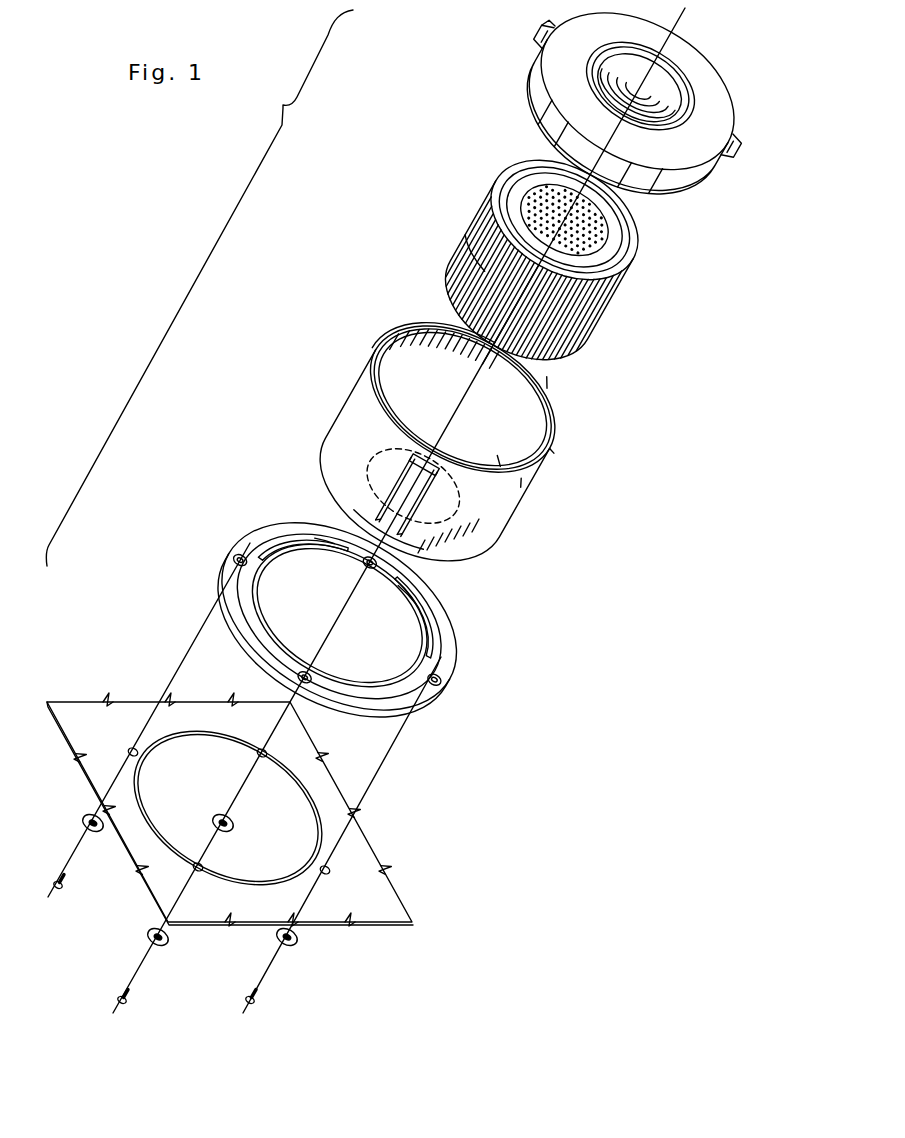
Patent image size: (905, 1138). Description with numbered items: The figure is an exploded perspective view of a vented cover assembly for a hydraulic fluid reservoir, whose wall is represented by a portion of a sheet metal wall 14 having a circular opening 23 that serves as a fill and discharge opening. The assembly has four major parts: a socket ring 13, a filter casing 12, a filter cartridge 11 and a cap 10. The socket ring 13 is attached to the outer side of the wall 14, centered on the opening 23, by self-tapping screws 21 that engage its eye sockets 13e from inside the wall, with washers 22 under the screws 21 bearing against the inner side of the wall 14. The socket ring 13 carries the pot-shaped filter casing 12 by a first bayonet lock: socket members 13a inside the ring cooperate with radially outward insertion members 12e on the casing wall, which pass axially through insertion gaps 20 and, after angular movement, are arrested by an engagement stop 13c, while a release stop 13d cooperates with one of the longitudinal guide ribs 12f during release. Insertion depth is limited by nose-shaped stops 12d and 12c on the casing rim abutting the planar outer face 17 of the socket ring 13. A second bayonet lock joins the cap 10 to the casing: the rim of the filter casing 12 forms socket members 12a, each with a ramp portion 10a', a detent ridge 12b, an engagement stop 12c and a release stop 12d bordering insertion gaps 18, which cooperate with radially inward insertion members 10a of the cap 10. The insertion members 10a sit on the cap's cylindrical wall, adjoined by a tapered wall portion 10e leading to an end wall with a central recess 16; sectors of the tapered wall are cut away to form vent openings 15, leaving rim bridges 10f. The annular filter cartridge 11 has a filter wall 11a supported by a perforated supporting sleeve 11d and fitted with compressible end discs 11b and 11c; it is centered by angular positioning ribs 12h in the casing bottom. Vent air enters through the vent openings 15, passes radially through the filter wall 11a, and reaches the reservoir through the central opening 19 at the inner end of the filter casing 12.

The cap 10 is at (530, 95).
The insertion member 10a is at (504, 40).
The lug notch 10a' is at (513, 22).
The rim bridge 10f is at (540, 60).
The tapered wall portion 10e is at (563, 113).
The filter cartridge 11 is at (470, 215).
The filter wall 11a is at (580, 313).
The outer end disc 11b is at (518, 168).
The inner end disc 11c is at (452, 268).
The perforated supporting sleeve 11d is at (585, 228).
The filter casing 12 is at (393, 322).
The socket member 12a is at (378, 395).
The detent ridge 12b is at (492, 487).
The engagement stop 12c is at (393, 418).
The release stop 12d is at (413, 438).
The insertion member 12e is at (437, 473).
The longitudinal guide rib 12f is at (423, 497).
The angular positioning rib 12h is at (500, 463).
The socket ring 13 is at (248, 522).
The socket member 13a is at (297, 557).
The engagement stop 13c is at (403, 617).
The release stop 13d is at (390, 593).
The eye socket 13e is at (447, 693).
The sheet metal wall 14 is at (363, 873).
The vent opening 15 is at (632, 160).
The central recess 16 is at (650, 93).
The planar outer face 17 is at (303, 533).
The insertion gap 18 is at (507, 360).
The central opening 19 is at (485, 543).
The insertion gap 20 is at (373, 587).
The self-tapping screw 21 is at (118, 1002).
The washer 22 is at (297, 945).
The circular opening 23 is at (290, 849).